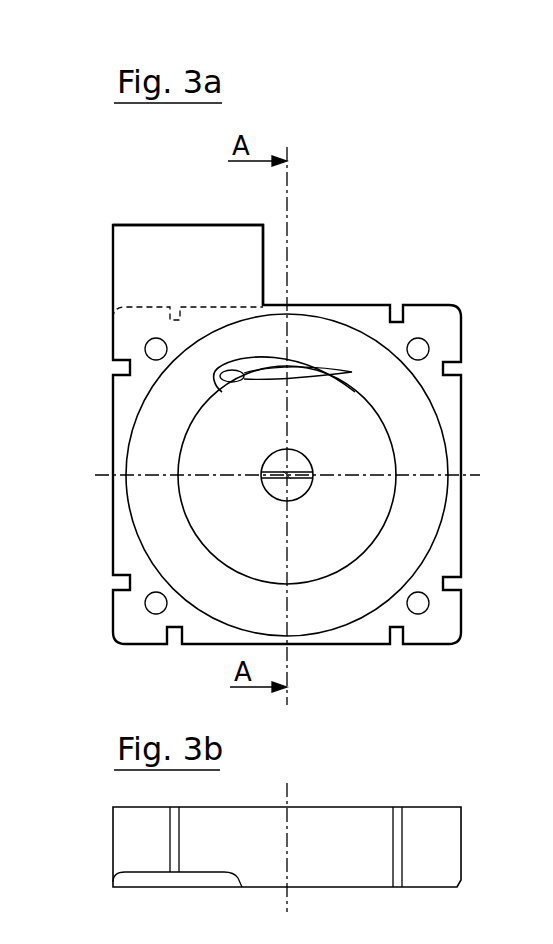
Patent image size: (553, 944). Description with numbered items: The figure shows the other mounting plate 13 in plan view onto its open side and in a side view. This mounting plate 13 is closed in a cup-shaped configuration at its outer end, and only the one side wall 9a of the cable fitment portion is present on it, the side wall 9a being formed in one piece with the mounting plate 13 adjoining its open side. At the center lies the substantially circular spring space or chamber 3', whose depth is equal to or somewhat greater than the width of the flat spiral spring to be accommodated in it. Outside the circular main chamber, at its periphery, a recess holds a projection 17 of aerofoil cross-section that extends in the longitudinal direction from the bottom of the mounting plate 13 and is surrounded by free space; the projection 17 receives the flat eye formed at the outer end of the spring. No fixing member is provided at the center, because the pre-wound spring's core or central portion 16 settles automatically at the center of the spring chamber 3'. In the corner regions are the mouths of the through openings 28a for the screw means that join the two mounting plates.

In FIG. 3A, the mounting plate 13 is at (445, 327).
In FIG. 3B, the mounting plate 13 is at (445, 820).
In FIG. 3A, the side wall 9a is at (188, 272).
In FIG. 3B, the side wall 9a is at (190, 882).
In FIG. 3A, the through opening 28a is at (147, 346).
In FIG. 3A, the projection 17 is at (238, 382).
In FIG. 3A, the core or central portion of the flat spiral spring 16 is at (285, 474).
In FIG. 3A, the spring space or chamber 3' is at (311, 502).